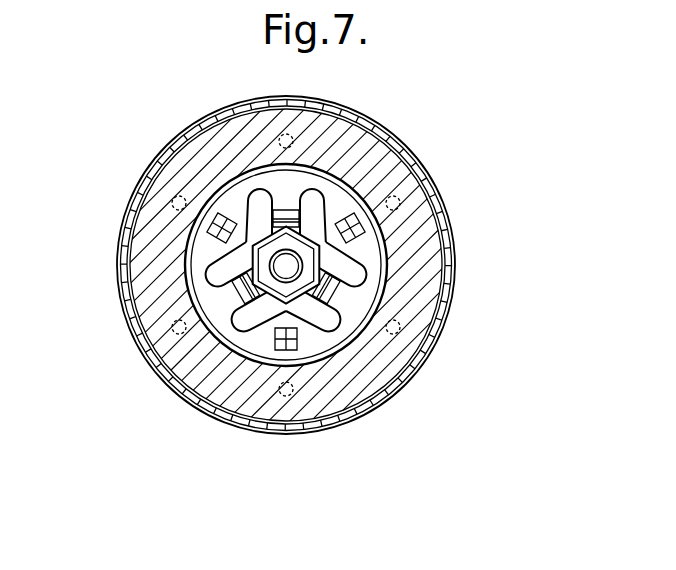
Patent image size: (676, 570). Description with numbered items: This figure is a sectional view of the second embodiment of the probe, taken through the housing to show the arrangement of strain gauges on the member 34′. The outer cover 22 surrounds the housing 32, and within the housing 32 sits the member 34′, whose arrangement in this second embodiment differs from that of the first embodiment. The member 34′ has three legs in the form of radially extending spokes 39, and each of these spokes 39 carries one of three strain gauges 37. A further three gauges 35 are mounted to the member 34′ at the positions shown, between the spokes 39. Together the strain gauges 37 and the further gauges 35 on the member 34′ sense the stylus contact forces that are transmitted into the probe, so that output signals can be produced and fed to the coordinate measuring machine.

The outer cover 22 is at (182, 140).
The housing 32 is at (175, 180).
The member 34′ is at (201, 251).
The gauges 35 is at (245, 207).
The strain gauges 37 is at (292, 200).
The spokes 39 is at (222, 299).